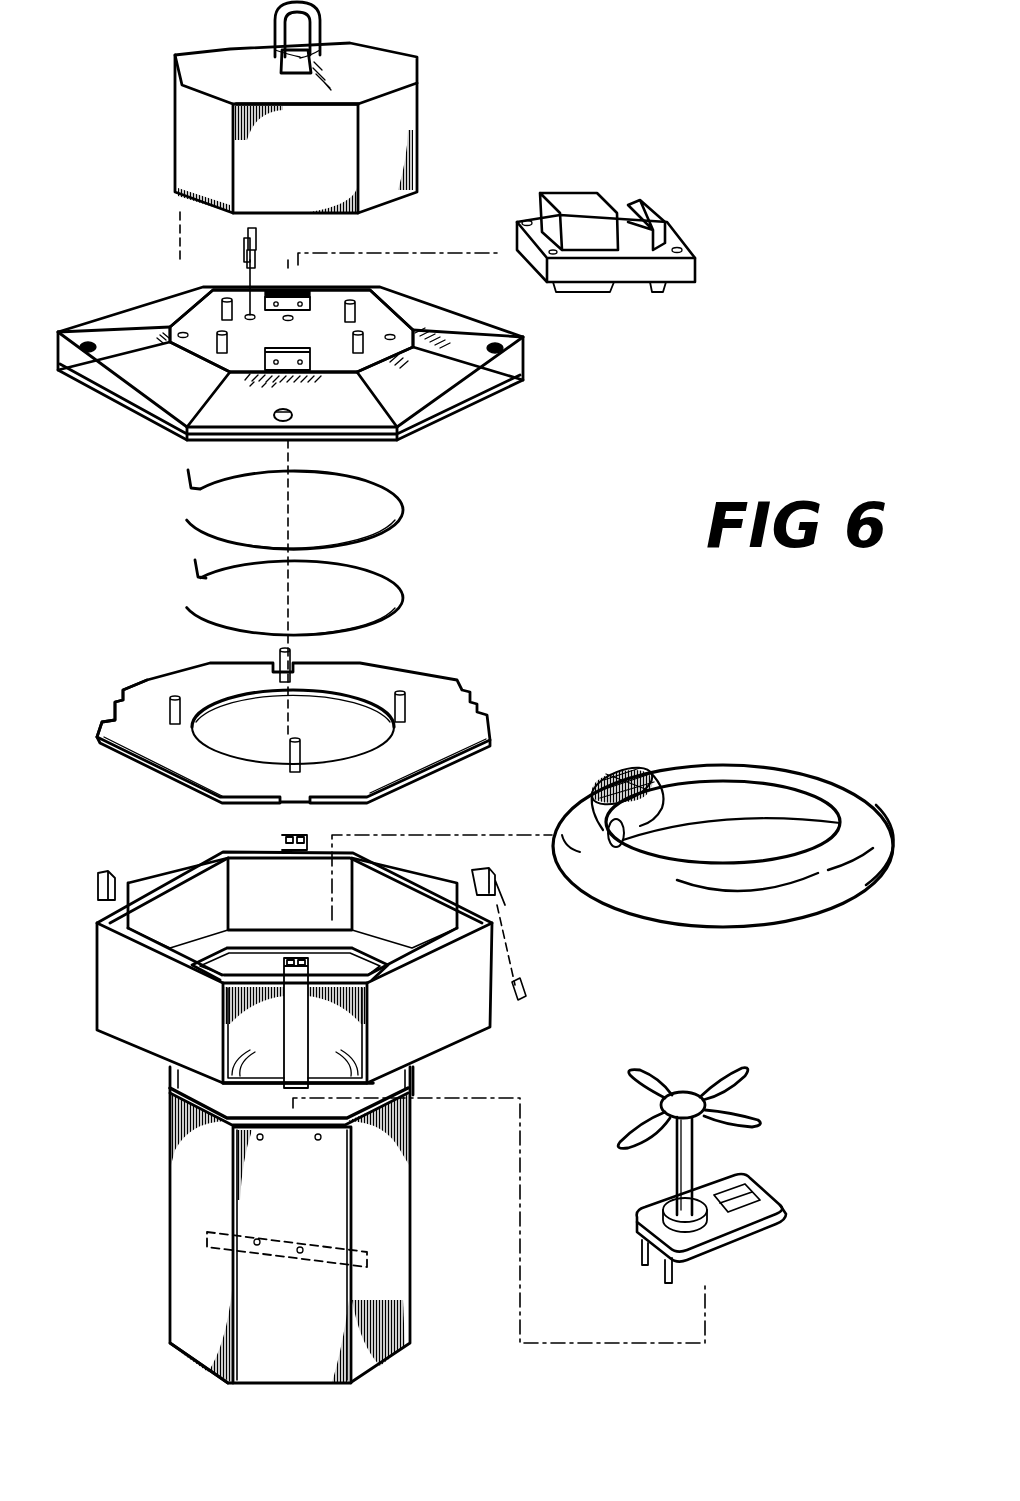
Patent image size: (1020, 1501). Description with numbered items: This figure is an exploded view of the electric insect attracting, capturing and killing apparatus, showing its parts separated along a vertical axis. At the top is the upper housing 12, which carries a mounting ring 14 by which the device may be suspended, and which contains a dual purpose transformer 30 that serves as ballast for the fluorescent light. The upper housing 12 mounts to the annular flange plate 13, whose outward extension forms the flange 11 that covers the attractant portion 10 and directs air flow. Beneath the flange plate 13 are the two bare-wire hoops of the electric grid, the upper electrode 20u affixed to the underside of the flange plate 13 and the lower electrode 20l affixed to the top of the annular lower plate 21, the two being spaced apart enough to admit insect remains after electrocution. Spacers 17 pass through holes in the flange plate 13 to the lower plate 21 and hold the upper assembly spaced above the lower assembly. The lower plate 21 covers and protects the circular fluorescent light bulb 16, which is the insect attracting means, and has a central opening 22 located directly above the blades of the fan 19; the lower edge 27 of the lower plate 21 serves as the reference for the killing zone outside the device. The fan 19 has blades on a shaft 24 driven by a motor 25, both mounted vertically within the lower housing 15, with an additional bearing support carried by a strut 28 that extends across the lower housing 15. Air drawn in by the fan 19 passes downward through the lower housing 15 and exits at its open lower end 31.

The attractant portion 10 is at (147, 1032).
The flange 11 is at (530, 360).
The upper housing 12 is at (182, 127).
The flange plate 13 is at (407, 315).
The mounting ring 14 is at (278, 18).
The lower housing 15 is at (188, 1272).
The light bulb 16 is at (800, 787).
The spacers 17 is at (291, 655).
The fan 19 is at (633, 1067).
The upper electrode 20u is at (384, 494).
The lower electrode 20l is at (402, 588).
The lower plate 21 is at (460, 738).
The central opening 22 is at (250, 713).
The shaft 24 is at (680, 1180).
The motor 25 is at (658, 1248).
The lower edge 27 is at (148, 683).
The strut 28 is at (330, 1233).
The transformer 30 is at (568, 196).
The open lower end 31 is at (196, 1371).